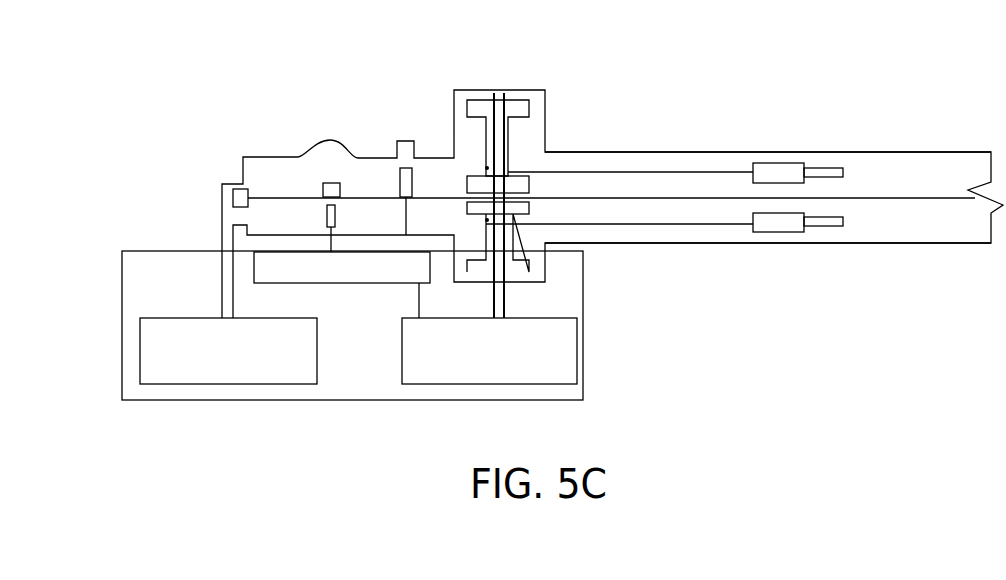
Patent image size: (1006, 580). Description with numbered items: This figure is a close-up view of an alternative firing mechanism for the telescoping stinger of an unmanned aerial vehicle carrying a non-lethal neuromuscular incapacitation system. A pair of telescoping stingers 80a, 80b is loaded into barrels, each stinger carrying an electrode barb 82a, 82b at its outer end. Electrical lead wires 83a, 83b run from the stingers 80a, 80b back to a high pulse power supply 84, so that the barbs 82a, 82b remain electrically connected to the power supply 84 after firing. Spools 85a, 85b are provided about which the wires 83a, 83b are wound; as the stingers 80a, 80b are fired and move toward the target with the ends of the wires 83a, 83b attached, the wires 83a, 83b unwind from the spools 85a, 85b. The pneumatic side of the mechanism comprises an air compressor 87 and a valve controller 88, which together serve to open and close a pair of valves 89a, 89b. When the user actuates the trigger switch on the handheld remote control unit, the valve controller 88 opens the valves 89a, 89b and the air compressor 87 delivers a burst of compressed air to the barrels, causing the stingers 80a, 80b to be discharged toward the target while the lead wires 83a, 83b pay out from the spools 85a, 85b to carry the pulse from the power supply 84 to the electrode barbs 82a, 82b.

The telescoping stinger 80a is at (780, 172).
The telescoping stinger 80b is at (777, 226).
The electrode barb 82a is at (832, 168).
The electrode barb 82b is at (831, 227).
The electrical lead wire 83a is at (706, 172).
The electrical lead wire 83b is at (706, 224).
The high pulse power supply 84 is at (577, 352).
The spool 85a is at (478, 108).
The spool 85b is at (513, 243).
The air compressor 87 is at (140, 353).
The valve controller 88 is at (254, 268).
The valve 89a is at (330, 182).
The valve 89b is at (410, 142).